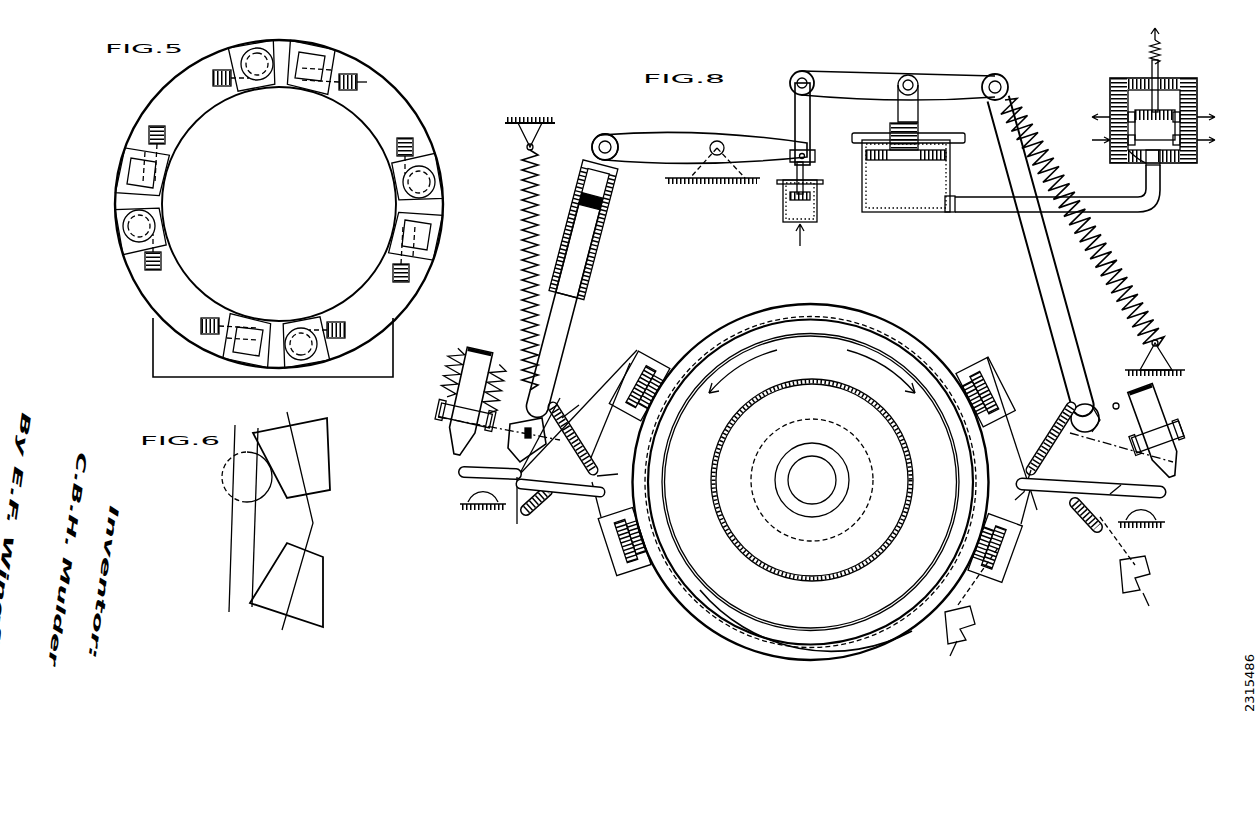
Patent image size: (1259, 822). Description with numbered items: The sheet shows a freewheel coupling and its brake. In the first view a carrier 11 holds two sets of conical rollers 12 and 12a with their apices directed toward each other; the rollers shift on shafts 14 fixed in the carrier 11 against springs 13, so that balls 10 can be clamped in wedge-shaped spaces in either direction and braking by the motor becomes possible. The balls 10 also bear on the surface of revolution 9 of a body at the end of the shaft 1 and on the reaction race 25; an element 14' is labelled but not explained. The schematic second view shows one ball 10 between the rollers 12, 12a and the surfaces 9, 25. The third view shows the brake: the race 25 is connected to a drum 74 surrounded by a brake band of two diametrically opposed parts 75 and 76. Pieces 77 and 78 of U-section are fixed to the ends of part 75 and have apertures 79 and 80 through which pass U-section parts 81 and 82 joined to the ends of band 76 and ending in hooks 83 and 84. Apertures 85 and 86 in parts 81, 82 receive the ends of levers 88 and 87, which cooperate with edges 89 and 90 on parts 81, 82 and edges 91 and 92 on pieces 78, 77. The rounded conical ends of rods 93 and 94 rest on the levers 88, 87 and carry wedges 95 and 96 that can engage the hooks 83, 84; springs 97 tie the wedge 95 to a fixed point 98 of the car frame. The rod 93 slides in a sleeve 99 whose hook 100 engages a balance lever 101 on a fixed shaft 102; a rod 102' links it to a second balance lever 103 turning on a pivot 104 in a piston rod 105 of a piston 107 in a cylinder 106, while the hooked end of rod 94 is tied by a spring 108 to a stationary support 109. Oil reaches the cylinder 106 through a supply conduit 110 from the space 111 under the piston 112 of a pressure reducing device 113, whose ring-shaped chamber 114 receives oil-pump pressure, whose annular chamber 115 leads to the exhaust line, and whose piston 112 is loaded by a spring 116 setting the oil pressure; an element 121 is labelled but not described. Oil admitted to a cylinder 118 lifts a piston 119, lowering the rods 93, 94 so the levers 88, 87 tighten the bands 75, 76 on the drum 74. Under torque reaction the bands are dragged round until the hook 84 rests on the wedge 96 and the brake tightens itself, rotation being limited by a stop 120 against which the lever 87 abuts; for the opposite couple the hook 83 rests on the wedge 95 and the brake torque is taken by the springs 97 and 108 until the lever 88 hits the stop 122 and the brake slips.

In FIG. 8, the shaft 1 is at (813, 489).
In FIG. 6, the surface of revolution 9 is at (252, 570).
In FIG. 8, the surface of revolution 9 is at (821, 377).
In FIG. 5, the balls 10 is at (262, 80).
In FIG. 5, the carrier 11 is at (400, 124).
In FIG. 5, the conical rollers 12 is at (252, 52).
In FIG. 6, the conical rollers 12 is at (318, 460).
In FIG. 5, the conical rollers 12a is at (318, 62).
In FIG. 6, the conical rollers 12a is at (307, 590).
In FIG. 5, the springs 13 is at (240, 97).
In FIG. 5, the shafts 14 is at (279, 204).
In FIG. 5, the wedge bolt 14' is at (346, 108).
In FIG. 6, the reaction race 25 is at (232, 532).
In FIG. 8, the reaction race 25 is at (769, 338).
In FIG. 8, the drum 74 is at (853, 317).
In FIG. 8, the brake band part 75 is at (915, 343).
In FIG. 8, the brake band part 76 is at (914, 632).
In FIG. 8, the U-section piece 77 is at (1010, 398).
In FIG. 8, the U-section piece 78 is at (634, 366).
In FIG. 8, the aperture 79 is at (1018, 440).
In FIG. 8, the aperture 80 is at (604, 426).
In FIG. 8, the U-section part 81 is at (600, 523).
In FIG. 8, the U-section part 82 is at (1012, 548).
In FIG. 8, the hook 83 is at (552, 406).
In FIG. 8, the hook 84 is at (1094, 410).
In FIG. 8, the aperture 85 is at (598, 496).
In FIG. 8, the aperture 86 is at (1025, 492).
In FIG. 8, the lever 87 is at (1162, 492).
In FIG. 8, the lever 88 is at (470, 481).
In FIG. 8, the edge 89 is at (590, 464).
In FIG. 8, the edge 90 is at (1030, 476).
In FIG. 8, the edge 91 is at (535, 513).
In FIG. 8, the edge 92 is at (1080, 531).
In FIG. 8, the rod 93 is at (481, 356).
In FIG. 8, the rod 94 is at (1070, 350).
In FIG. 8, the wedge 95 is at (446, 419).
In FIG. 8, the wedge 96 is at (1184, 436).
In FIG. 8, the springs 97 is at (524, 243).
In FIG. 8, the fixed support 98 is at (525, 148).
In FIG. 8, the sleeve 99 is at (600, 253).
In FIG. 8, the hook 100 is at (616, 136).
In FIG. 8, the balance lever 101 is at (693, 139).
In FIG. 8, the fixed shaft 102 is at (712, 176).
In FIG. 8, the rod 102' is at (821, 124).
In FIG. 8, the second balance lever 103 is at (879, 81).
In FIG. 8, the pivot 104 is at (917, 83).
In FIG. 8, the piston rod 105 is at (918, 125).
In FIG. 8, the cylinder 106 is at (950, 180).
In FIG. 8, the piston 107 is at (905, 161).
In FIG. 8, the spring 108 is at (1118, 270).
In FIG. 8, the stationary support 109 is at (1170, 358).
In FIG. 8, the liquid supply conduit 110 is at (1007, 213).
In FIG. 8, the space 111 is at (1162, 170).
In FIG. 8, the piston 112 is at (1200, 106).
In FIG. 8, the pressure reducing device 113 is at (1196, 162).
In FIG. 8, the ring-shaped chamber 114 is at (1196, 142).
In FIG. 8, the annular chamber 115 is at (1200, 114).
In FIG. 8, the spring 116 is at (1150, 47).
In FIG. 8, the cylinder 118 is at (817, 212).
In FIG. 8, the piston 119 is at (783, 210).
In FIG. 8, the stop 120 is at (1150, 524).
In FIG. 8, the passage 121 is at (1119, 166).
In FIG. 8, the stop 122 is at (491, 509).